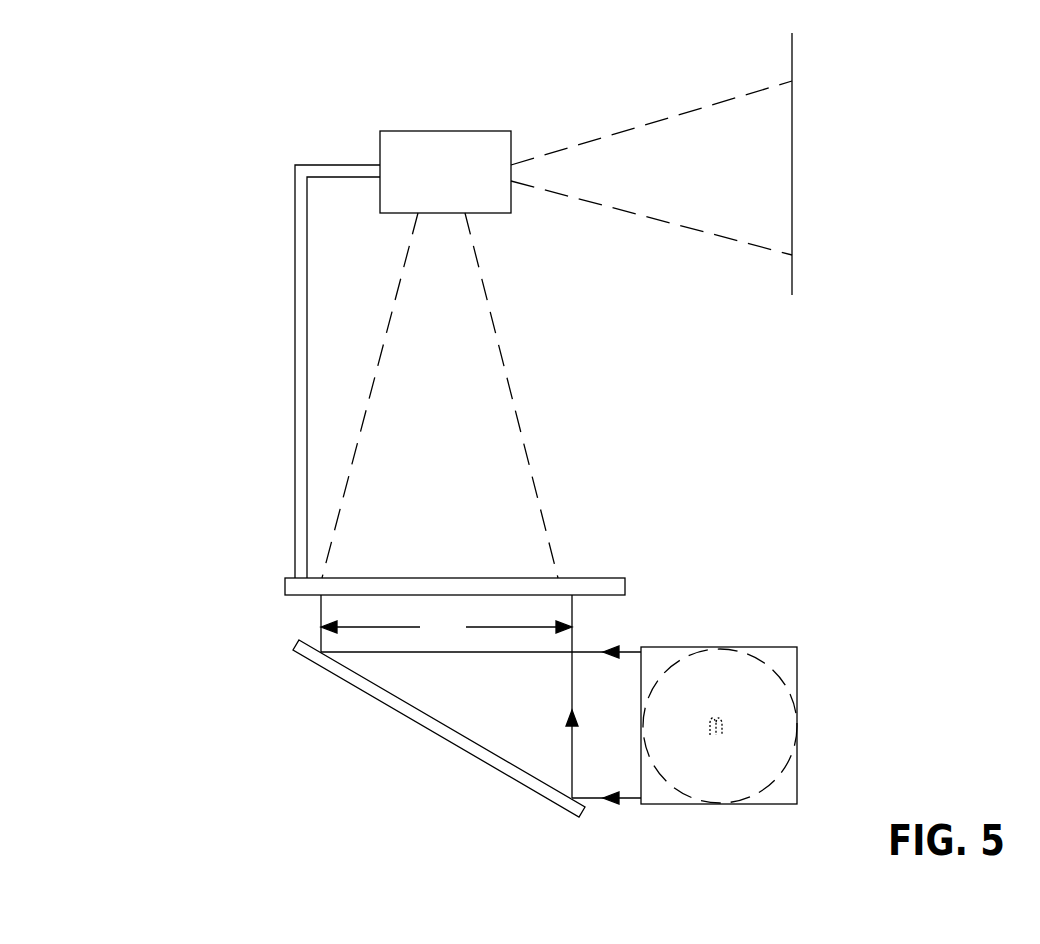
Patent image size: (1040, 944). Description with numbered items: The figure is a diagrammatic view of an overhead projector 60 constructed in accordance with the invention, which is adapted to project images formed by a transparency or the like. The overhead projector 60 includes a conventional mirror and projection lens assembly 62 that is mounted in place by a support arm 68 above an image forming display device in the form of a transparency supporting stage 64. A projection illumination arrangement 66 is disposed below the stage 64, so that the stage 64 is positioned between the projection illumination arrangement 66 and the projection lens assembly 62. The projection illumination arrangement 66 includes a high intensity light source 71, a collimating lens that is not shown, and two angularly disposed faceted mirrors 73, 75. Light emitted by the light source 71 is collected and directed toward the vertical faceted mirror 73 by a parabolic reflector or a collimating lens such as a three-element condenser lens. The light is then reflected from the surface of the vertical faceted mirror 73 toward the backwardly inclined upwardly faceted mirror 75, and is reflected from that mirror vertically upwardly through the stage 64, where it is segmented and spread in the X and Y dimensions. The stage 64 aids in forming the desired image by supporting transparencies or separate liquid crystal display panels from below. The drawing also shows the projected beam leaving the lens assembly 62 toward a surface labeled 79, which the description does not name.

The projection display system 60 is at (118, 335).
The projector 62 is at (462, 108).
The platform / stage 64 is at (212, 588).
The light beam 66 is at (638, 630).
The support arm 68 is at (295, 513).
The lamp 71 is at (723, 707).
The light source housing 73 is at (820, 718).
The mirror 75 is at (414, 750).
The screen 79 is at (792, 230).